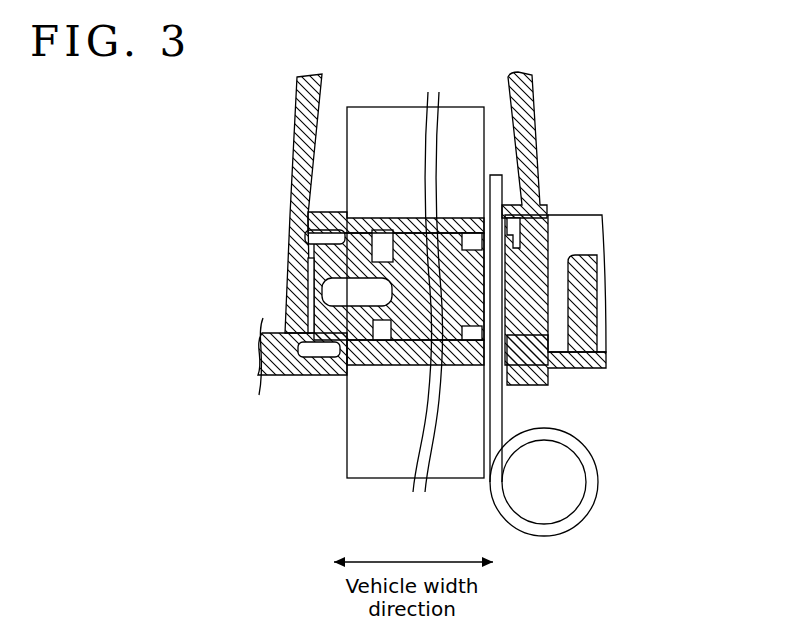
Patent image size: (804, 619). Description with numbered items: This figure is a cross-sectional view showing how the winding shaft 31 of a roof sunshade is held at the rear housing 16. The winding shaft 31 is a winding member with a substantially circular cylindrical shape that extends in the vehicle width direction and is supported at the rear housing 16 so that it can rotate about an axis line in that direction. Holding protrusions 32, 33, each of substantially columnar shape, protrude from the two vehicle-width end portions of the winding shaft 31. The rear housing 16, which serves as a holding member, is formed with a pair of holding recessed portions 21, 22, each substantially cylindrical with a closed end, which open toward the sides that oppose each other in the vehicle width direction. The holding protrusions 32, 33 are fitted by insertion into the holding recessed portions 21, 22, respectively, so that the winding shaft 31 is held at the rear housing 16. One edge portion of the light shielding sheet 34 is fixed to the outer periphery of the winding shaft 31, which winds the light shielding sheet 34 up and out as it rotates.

The rear housing 16 is at (535, 125).
The holding recessed portion 21 is at (312, 376).
The holding recessed portion 22 is at (527, 333).
The winding shaft 31 is at (333, 207).
The holding protrusion 32 is at (306, 273).
The holding protrusion 33 is at (528, 256).
The light shielding sheet 34 is at (380, 107).